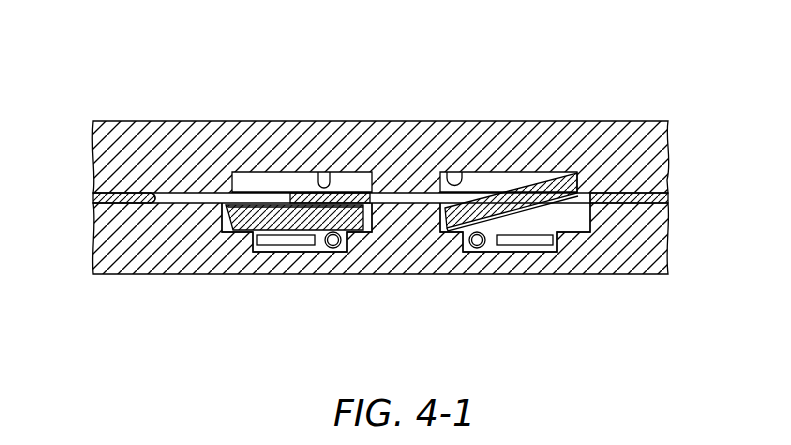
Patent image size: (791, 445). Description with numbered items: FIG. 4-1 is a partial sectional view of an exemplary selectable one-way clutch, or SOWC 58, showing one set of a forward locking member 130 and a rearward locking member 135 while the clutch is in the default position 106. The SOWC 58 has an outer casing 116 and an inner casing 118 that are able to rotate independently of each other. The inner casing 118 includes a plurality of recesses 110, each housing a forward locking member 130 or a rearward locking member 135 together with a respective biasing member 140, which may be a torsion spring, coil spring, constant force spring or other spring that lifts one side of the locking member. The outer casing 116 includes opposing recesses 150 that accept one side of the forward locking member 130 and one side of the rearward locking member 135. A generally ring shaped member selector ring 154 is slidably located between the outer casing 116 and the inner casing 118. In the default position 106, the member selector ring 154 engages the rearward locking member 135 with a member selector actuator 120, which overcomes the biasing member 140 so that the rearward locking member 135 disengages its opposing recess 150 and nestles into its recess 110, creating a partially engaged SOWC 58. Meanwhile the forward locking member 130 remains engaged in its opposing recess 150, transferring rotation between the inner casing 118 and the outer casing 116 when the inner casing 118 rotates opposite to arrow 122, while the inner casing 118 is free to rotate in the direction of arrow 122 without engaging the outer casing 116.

The SOWC 58 is at (103, 90).
The default position 106 is at (76, 198).
The recess 110 is at (224, 234).
The outer casing 116 is at (670, 150).
The inner casing 118 is at (670, 233).
The member selector actuator 120 is at (337, 192).
The arrow 122 is at (680, 197).
The forward locking member 130 is at (518, 181).
The rearward locking member 135 is at (274, 196).
The biasing member 140 is at (335, 258).
The opposing recess 150 is at (321, 172).
The member selector ring 154 is at (156, 196).